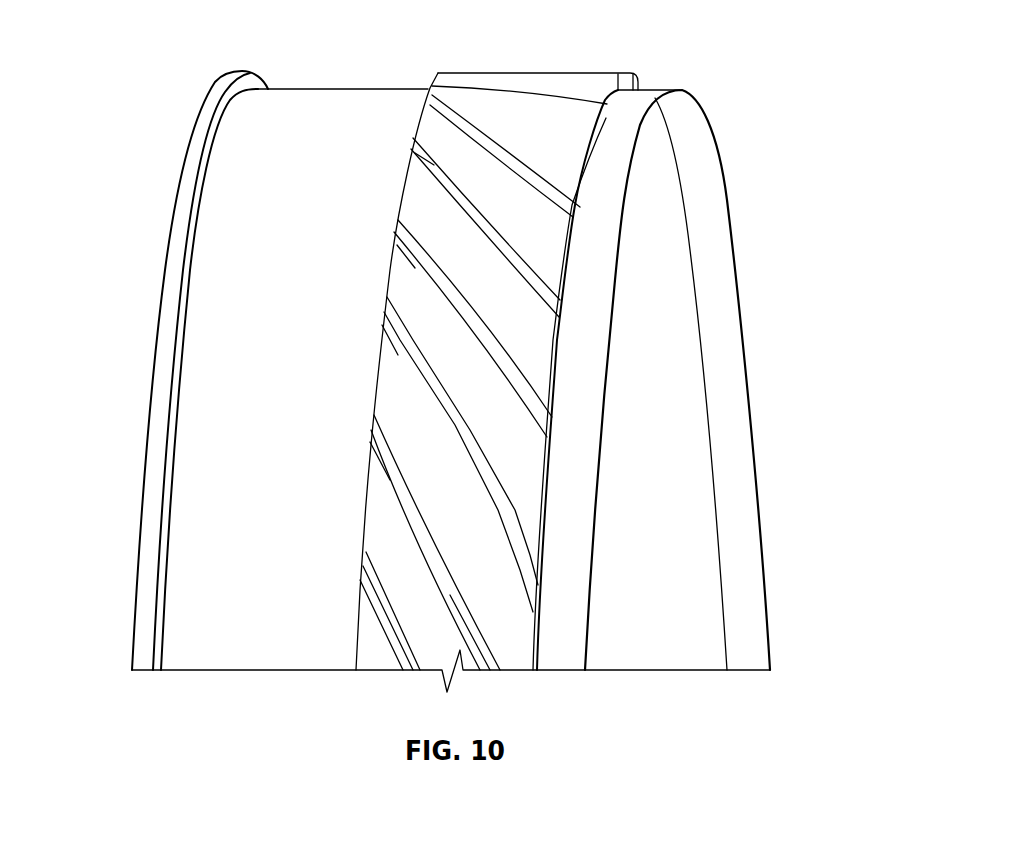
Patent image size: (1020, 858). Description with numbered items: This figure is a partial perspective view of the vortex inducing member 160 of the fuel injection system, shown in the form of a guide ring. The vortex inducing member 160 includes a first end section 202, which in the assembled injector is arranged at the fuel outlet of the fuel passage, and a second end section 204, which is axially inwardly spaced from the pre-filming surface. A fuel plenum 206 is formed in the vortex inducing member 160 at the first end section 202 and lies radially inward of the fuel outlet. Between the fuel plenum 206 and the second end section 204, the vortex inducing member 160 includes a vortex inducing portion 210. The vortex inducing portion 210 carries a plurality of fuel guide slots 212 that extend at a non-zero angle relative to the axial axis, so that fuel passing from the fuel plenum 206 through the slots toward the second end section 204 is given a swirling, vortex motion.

The vortex inducing member 160 is at (200, 70).
The first end section 202 is at (165, 262).
The second end section 204 is at (623, 198).
The fuel plenum 206 is at (207, 343).
The vortex inducing portion 210 is at (456, 97).
The fuel guide slots 212 is at (416, 144).